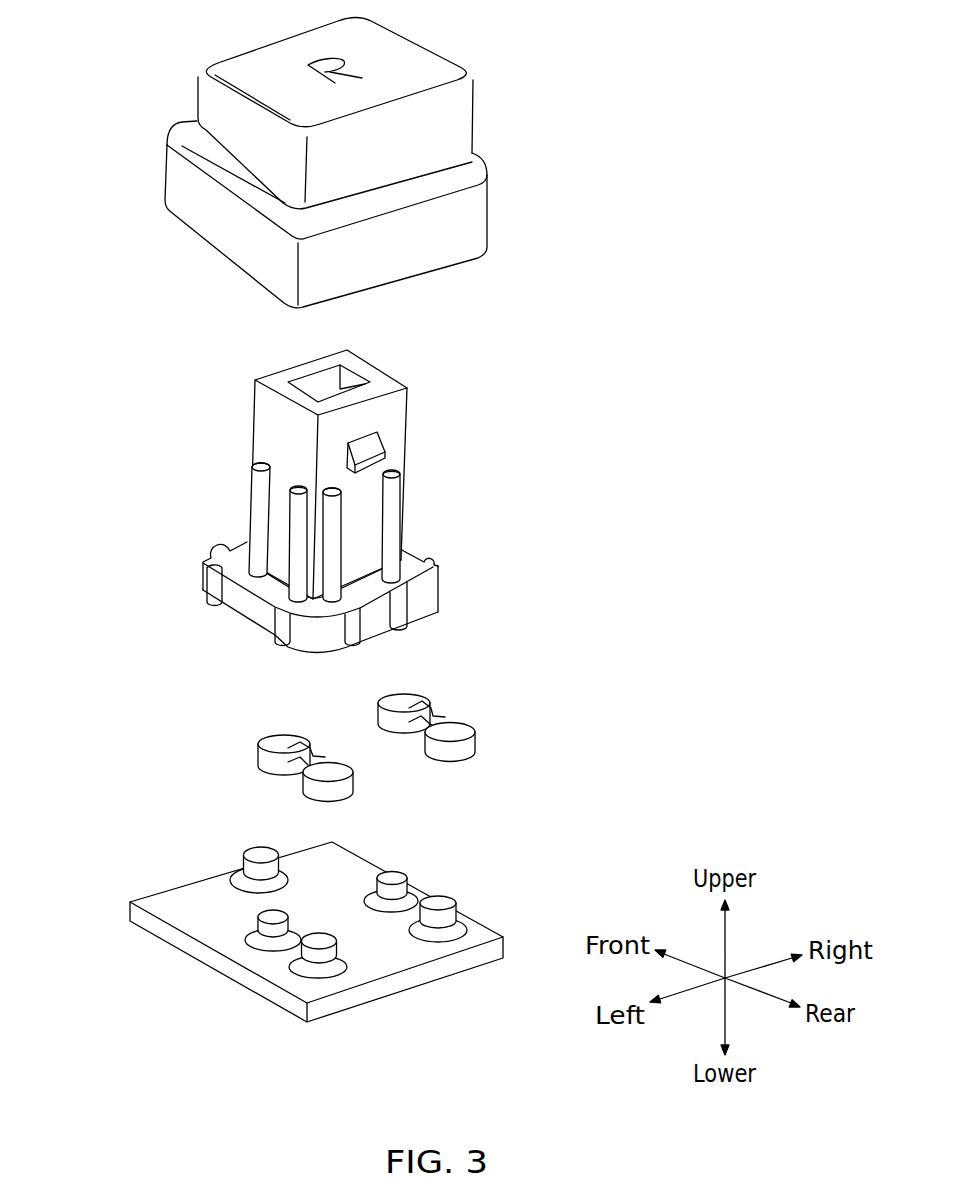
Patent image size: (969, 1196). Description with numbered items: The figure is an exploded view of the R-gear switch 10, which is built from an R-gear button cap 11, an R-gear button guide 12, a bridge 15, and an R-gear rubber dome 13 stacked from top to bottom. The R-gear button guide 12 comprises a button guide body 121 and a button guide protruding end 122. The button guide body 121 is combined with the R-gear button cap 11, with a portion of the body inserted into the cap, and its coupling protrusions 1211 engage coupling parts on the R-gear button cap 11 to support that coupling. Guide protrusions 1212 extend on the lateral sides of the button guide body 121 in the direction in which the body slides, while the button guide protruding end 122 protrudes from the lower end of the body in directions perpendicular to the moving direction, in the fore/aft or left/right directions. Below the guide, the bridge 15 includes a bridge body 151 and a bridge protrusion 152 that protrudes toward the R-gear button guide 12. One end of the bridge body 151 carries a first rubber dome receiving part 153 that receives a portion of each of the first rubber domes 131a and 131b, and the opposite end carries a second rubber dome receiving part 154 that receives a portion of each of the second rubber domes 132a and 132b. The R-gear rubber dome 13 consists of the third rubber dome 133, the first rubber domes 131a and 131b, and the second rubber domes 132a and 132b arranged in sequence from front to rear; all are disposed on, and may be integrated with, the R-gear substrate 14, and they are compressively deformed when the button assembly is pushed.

The R-gear switch 10 is at (51, 40).
The R-gear button cap 11 is at (463, 118).
The R-gear button guide 12 is at (328, 489).
The button guide body 121 is at (354, 474).
The coupling protrusion 1211 is at (373, 445).
The guide protrusion 1212 is at (393, 522).
The button guide protruding end 122 is at (213, 558).
The bridge 15 is at (430, 721).
The bridge body 151 is at (430, 720).
The bridge protrusion 152 is at (430, 711).
The first rubber dome receiving part 153 is at (383, 720).
The second rubber dome receiving part 154 is at (467, 747).
The R-gear rubber dome 13 is at (347, 932).
The first rubber dome 131a is at (240, 936).
The first rubber dome 131b is at (405, 887).
The second rubber dome 132a is at (292, 967).
The second rubber dome 132b is at (447, 918).
The third rubber dome 133 is at (253, 868).
The R-gear substrate 14 is at (397, 960).